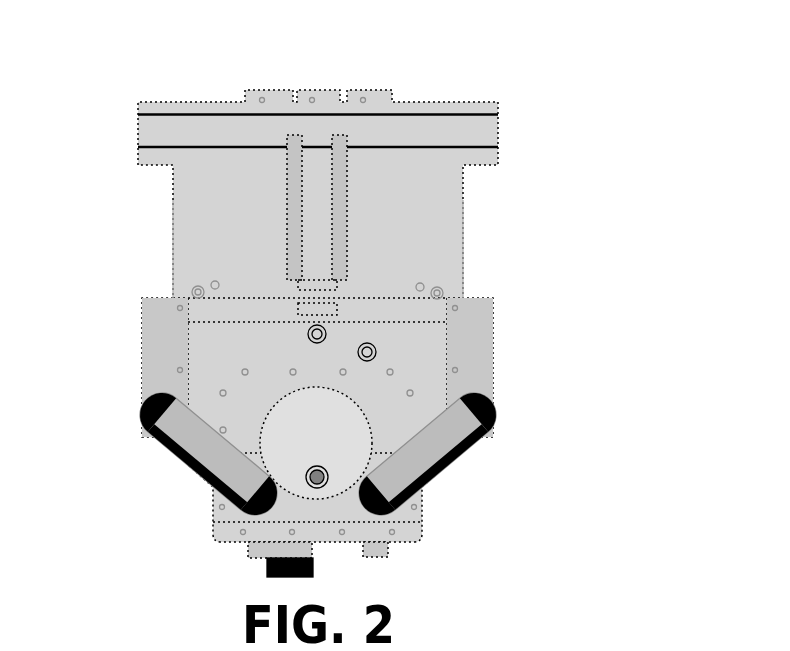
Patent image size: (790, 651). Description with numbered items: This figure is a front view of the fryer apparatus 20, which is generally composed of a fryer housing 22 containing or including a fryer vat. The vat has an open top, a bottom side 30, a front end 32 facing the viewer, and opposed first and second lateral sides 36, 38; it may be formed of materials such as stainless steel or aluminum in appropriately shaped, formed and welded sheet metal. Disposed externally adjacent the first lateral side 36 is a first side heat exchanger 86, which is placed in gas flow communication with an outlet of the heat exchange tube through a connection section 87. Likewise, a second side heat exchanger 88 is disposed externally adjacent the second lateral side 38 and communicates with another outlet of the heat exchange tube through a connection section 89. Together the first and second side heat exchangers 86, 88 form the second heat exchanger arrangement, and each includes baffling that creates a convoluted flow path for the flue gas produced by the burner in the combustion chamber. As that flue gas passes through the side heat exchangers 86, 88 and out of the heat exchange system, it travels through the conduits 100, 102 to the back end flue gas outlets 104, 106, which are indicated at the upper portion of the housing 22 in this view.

The fryer apparatus 20 is at (557, 111).
The fryer housing 22 is at (174, 228).
The bottom side 30 is at (223, 540).
The front end 32 is at (393, 333).
The first lateral side 36 is at (172, 267).
The second lateral side 38 is at (463, 243).
The first side heat exchanger 86 is at (150, 368).
The connection section 87 is at (180, 433).
The second side heat exchanger 88 is at (477, 330).
The connection section 89 is at (442, 450).
The conduit 100 is at (287, 227).
The conduit 102 is at (340, 203).
The back end flue gas outlet 104 is at (293, 135).
The back end flue gas outlet 106 is at (340, 133).